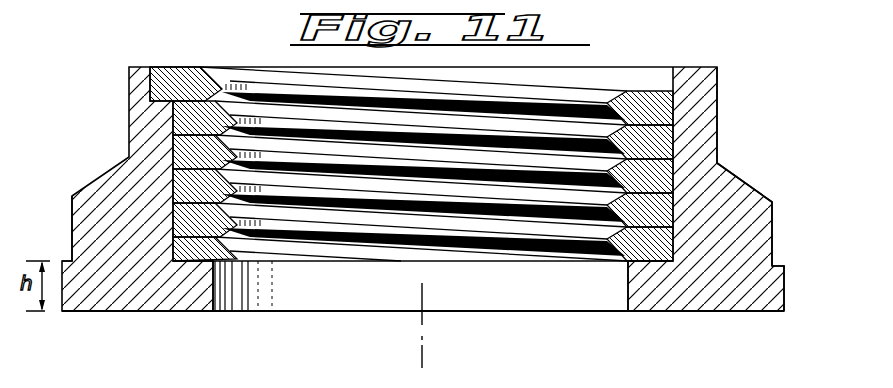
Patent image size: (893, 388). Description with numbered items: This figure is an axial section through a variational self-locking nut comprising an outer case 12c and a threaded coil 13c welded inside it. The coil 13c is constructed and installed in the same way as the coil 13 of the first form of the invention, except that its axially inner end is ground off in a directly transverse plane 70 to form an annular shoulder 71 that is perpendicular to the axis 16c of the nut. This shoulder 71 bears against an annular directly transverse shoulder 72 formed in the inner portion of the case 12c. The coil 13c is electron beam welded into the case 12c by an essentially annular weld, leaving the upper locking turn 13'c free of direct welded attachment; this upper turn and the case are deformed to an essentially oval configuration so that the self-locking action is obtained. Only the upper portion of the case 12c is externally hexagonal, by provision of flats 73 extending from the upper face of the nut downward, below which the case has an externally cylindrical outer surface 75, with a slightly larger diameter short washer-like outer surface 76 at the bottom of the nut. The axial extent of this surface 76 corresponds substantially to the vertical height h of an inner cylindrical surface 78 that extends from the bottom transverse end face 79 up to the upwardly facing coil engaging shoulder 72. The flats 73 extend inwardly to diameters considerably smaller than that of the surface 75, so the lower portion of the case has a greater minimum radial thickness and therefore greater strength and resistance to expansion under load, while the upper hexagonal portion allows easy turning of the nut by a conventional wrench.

The outer case 12c is at (720, 303).
The coil 13c is at (303, 275).
The upper locking turn 13'c is at (644, 83).
The coil 13 is at (430, 96).
The axis 16c is at (424, 357).
The directly transverse plane 70 is at (25, 312).
The annular shoulder 71 is at (195, 259).
The annular directly transverse shoulder 72 is at (657, 252).
The flats 73 is at (718, 105).
The externally cylindrical outer surface 75 is at (773, 247).
The washer-like outer surface 76 is at (785, 300).
The inner cylindrical surface 78 is at (228, 312).
The bottom transverse end face 79 is at (775, 314).